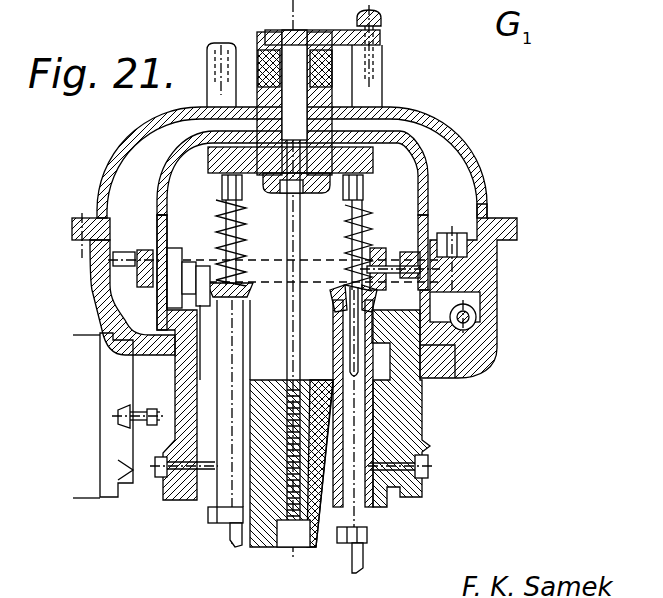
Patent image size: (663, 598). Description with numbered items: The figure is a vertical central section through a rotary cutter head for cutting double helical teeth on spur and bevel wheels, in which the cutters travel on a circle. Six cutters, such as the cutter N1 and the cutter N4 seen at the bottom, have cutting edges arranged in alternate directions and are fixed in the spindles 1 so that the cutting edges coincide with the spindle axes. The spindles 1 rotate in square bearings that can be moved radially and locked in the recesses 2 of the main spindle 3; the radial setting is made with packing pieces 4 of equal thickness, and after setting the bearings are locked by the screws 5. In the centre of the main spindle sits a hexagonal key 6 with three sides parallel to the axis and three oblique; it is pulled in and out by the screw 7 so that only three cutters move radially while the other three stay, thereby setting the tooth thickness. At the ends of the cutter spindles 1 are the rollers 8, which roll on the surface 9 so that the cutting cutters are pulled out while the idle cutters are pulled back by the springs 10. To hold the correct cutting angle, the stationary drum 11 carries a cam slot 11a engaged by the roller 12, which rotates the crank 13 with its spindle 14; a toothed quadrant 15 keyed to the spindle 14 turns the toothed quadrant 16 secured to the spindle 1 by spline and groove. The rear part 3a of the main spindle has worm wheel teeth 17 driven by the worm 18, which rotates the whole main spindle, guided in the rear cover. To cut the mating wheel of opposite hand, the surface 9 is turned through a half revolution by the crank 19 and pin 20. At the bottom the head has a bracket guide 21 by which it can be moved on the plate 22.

The spindle 1 is at (372, 518).
The recess 2 is at (390, 492).
The main spindle 3 is at (422, 372).
The rear part of the main spindle 3a is at (162, 162).
The packing piece 4 is at (245, 548).
The screw 5 is at (160, 478).
The hexagonal key 6 is at (258, 546).
The screw 7 is at (301, 334).
The roller 8 is at (232, 178).
The surface 9 is at (368, 172).
The spring 10 is at (222, 216).
The stationary drum 11 is at (110, 266).
The cam slot 11a is at (270, 260).
The roller 12 is at (452, 248).
The crank 13 is at (482, 197).
The spindle 14 is at (404, 260).
The toothed quadrant 15 is at (378, 248).
The toothed quadrant 16 is at (336, 296).
The worm wheel teeth 17 is at (437, 325).
The worm 18 is at (477, 314).
The crank 19 is at (384, 38).
The pin 20 is at (383, 17).
The bracket guide 21 is at (125, 352).
The plate 22 is at (120, 437).
The cutter N1 is at (364, 563).
The cutter N4 is at (230, 538).